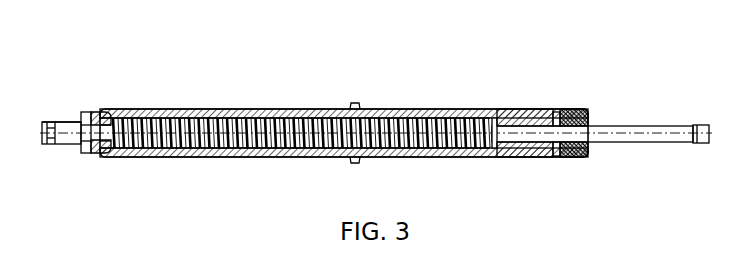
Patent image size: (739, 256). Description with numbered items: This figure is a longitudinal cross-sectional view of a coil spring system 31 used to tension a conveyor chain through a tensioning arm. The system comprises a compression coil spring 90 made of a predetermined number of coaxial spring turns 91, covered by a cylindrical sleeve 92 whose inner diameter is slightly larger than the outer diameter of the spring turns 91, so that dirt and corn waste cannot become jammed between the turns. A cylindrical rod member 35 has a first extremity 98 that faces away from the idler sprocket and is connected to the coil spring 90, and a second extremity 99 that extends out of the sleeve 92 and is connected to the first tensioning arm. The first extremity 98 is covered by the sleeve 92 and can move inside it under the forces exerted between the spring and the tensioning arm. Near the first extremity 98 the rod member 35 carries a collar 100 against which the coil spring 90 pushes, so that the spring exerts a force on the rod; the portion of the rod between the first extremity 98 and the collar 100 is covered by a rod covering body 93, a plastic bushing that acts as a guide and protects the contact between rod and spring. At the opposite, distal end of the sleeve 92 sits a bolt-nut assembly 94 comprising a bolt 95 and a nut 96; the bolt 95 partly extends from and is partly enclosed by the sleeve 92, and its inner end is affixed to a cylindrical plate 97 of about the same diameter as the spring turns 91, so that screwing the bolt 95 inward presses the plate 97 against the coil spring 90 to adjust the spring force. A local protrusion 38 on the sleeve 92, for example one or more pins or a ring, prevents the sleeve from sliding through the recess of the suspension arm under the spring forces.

The spring system 31 is at (632, 76).
The rod member 35 is at (640, 134).
The local protrusion 38 is at (357, 160).
The coil spring 90 is at (260, 125).
The spring turns 91 is at (403, 112).
The cylindrical sleeve 92 is at (213, 157).
The rod covering body 93 is at (547, 157).
The bolt-nut assembly 94 is at (54, 97).
The bolt 95 is at (70, 138).
The nut 96 is at (86, 110).
The cylindrical plate 97 is at (118, 110).
The first extremity 98 is at (500, 128).
The second extremity 99 is at (702, 125).
The collar 100 is at (558, 157).